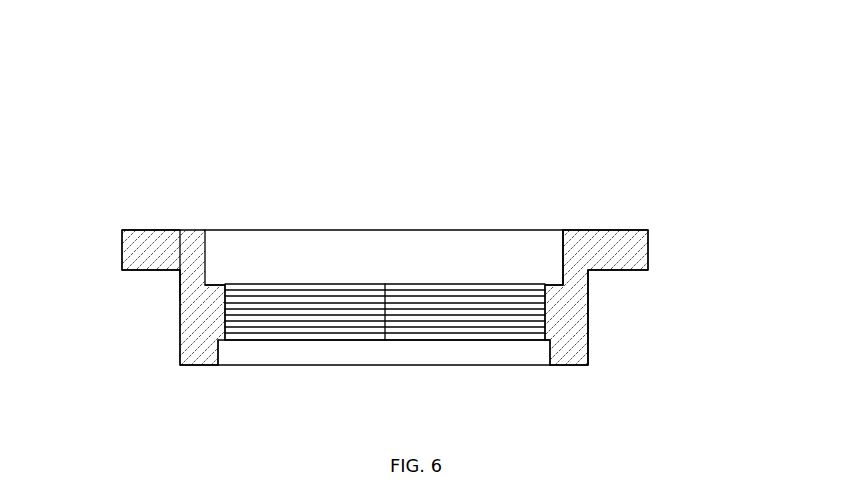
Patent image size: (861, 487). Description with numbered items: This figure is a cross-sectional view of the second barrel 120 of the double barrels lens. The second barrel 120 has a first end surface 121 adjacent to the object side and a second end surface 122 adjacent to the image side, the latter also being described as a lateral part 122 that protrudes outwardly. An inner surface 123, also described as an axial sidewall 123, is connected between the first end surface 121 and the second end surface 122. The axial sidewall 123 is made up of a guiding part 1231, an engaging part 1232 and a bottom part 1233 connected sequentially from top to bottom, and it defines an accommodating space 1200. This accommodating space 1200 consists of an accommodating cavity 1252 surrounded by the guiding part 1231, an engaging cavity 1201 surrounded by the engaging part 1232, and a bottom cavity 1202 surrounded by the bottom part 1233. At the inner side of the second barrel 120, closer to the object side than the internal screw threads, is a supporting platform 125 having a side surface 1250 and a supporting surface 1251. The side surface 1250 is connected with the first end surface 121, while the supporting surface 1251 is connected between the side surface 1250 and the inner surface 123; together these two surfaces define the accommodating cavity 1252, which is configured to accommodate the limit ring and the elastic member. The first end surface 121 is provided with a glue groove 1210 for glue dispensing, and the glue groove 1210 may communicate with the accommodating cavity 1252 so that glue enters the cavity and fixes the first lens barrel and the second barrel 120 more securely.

The second barrel 120 is at (367, 48).
The accommodating space 1200 is at (528, 162).
The engaging cavity 1201 is at (432, 353).
The bottom cavity 1202 is at (330, 353).
The first end surface 121 is at (627, 225).
The glue groove 1210 is at (200, 233).
The second end surface 122 is at (148, 268).
The inner surface 123 is at (88, 318).
The guiding part 1231 is at (200, 270).
The engaging part 1232 is at (213, 323).
The bottom part 1233 is at (205, 347).
The supporting platform 125 is at (772, 245).
The side surface 1250 is at (565, 250).
The supporting surface 1251 is at (550, 285).
The accommodating cavity 1252 is at (541, 257).